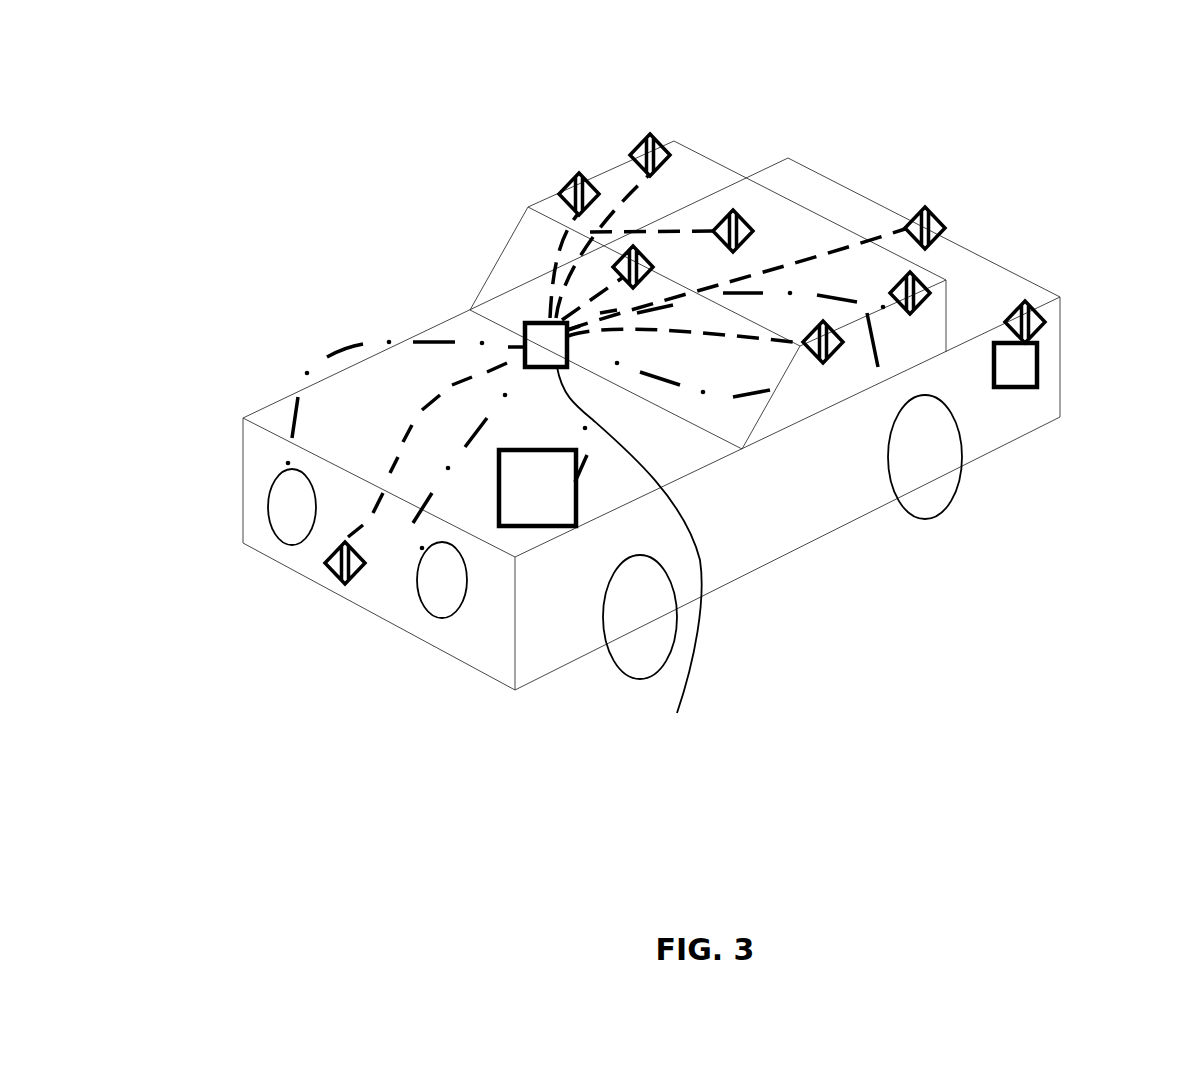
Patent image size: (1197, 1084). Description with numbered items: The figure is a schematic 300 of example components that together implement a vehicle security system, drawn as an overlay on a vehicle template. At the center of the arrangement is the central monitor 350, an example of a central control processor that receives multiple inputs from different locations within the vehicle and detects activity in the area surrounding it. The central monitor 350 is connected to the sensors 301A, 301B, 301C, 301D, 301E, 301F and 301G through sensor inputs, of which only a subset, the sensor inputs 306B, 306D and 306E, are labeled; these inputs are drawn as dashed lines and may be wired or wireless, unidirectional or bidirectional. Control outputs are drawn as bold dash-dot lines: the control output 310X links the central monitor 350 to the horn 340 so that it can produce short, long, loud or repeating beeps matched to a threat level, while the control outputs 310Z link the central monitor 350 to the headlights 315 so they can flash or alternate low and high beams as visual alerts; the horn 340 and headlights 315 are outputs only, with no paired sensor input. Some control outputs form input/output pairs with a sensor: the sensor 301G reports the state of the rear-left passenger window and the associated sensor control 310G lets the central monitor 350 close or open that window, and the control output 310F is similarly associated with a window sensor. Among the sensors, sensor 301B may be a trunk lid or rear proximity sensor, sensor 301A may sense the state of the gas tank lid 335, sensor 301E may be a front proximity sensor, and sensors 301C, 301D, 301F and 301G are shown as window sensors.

The schematic 300 is at (1143, 128).
The sensor 301A is at (1034, 303).
The sensor 301B is at (938, 213).
The sensor 301C is at (650, 135).
The sensor 301D is at (579, 173).
The sensor 301E is at (360, 578).
The sensor 301F is at (835, 352).
The sensor 301G is at (930, 293).
The sensor input 306B is at (822, 262).
The sensor input 306D is at (556, 236).
The sensor input 306E is at (388, 479).
The control output 310F is at (742, 398).
The sensor control 310G is at (878, 367).
The control output 310X is at (629, 574).
The control output 310Z is at (392, 645).
The headlights 315 is at (455, 615).
The gas tank lid 335 is at (1033, 388).
The horn 340 is at (537, 527).
The central monitor 350 is at (537, 322).